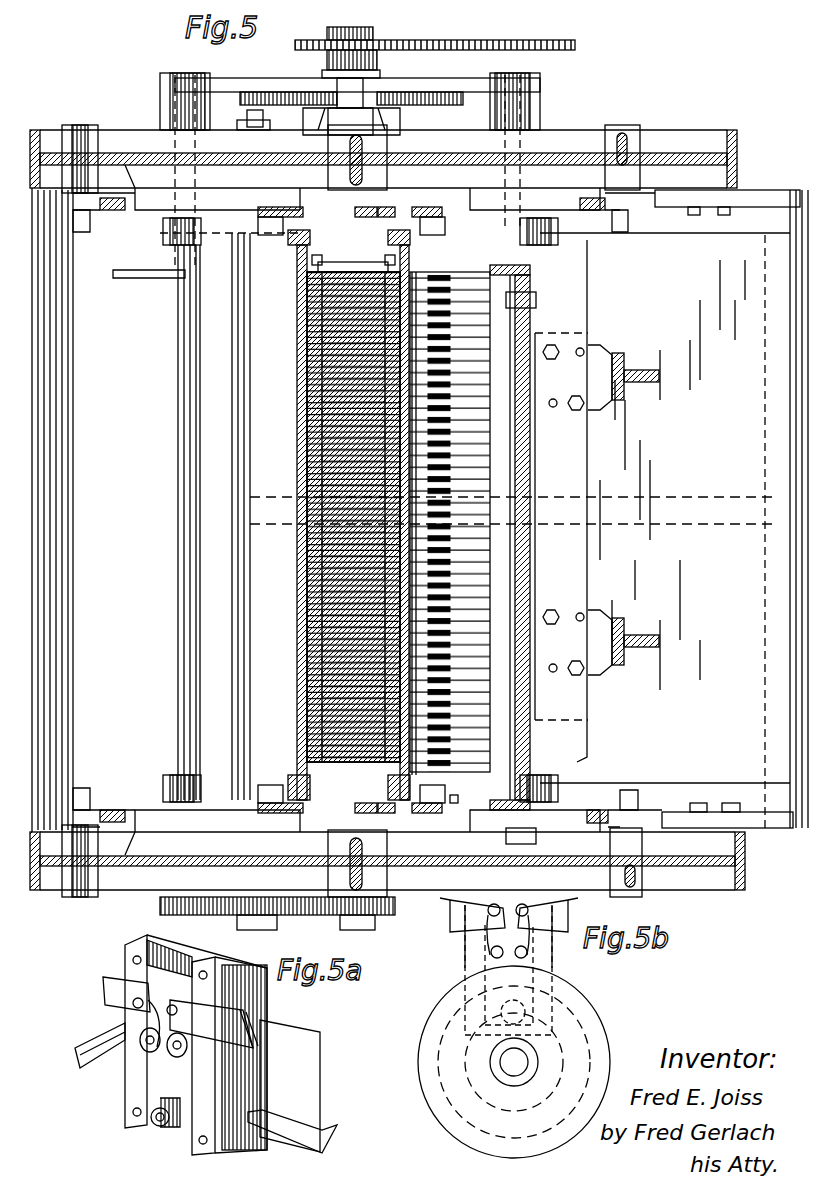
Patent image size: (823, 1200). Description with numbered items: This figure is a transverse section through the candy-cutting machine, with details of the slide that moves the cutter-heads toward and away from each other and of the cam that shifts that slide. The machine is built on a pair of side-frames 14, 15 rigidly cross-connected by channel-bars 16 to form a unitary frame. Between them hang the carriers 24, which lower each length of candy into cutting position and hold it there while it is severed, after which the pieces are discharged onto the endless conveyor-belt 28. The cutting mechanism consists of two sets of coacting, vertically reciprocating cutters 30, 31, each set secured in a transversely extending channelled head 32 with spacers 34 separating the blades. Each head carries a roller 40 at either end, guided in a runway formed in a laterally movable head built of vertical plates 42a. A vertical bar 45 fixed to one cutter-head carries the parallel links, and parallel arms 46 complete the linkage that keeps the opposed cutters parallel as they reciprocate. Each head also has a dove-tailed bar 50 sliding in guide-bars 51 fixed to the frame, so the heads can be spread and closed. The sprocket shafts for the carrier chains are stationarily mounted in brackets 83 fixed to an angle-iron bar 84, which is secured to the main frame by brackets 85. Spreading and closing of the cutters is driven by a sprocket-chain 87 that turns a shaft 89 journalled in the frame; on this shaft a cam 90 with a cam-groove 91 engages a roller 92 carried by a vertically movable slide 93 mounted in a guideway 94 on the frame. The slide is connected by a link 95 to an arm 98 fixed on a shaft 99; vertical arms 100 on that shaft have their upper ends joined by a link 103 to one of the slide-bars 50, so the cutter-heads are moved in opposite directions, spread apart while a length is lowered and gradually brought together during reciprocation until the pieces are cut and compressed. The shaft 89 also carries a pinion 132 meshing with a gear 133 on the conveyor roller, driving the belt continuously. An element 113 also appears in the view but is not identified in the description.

In FIG. 5, the side-frame 14 is at (720, 880).
In FIG. 5, the side-frame 15 is at (665, 155).
In FIG. 5A, the side-frame 15 is at (206, 1086).
In FIG. 5, the channel-bars 16 is at (58, 670).
In FIG. 5, the carriers 24 is at (475, 485).
In FIG. 5, the endless conveyor-belt 28 is at (333, 522).
In FIG. 5, the cutters 30 is at (360, 272).
In FIG. 5, the cutters 31 is at (300, 268).
In FIG. 5, the channelled head 32 is at (297, 334).
In FIG. 5, the spacers 34 is at (300, 386).
In FIG. 5, the roller 40 is at (316, 205).
In FIG. 5, the vertical plates 42a is at (430, 808).
In FIG. 5, the vertical bar 45 is at (300, 255).
In FIG. 5, the parallel arms 46 is at (108, 212).
In FIG. 5, the dove-tailed bar 50 is at (282, 205).
In FIG. 5, the guide-bars 51 is at (160, 205).
In FIG. 5, the brackets 83 is at (470, 272).
In FIG. 5, the angle-iron bar 84 is at (562, 452).
In FIG. 5, the brackets 85 is at (638, 372).
In FIG. 5, the sprocket-chain 87 is at (502, 46).
In FIG. 5, the shaft 89 is at (300, 775).
In FIG. 5B, the shaft 89 is at (520, 1063).
In FIG. 5, the cam 90 is at (245, 95).
In FIG. 5B, the cam 90 is at (416, 1045).
In FIG. 5B, the cam-groove 91 is at (440, 1082).
In FIG. 5A, the roller 92 is at (165, 1128).
In FIG. 5B, the roller 92 is at (520, 1013).
In FIG. 5, the slide 93 is at (380, 95).
In FIG. 5A, the slide 93 is at (160, 1075).
In FIG. 5B, the slide 93 is at (485, 960).
In FIG. 5, the guideway 94 is at (392, 117).
In FIG. 5A, the guideway 94 is at (128, 1100).
In FIG. 5B, the guideway 94 is at (545, 958).
In FIG. 5A, the link 95 is at (140, 1022).
In FIG. 5B, the link 95 is at (490, 945).
In FIG. 5, the arm 98 is at (275, 86).
In FIG. 5A, the arm 98 is at (105, 990).
In FIG. 5B, the arm 98 is at (455, 912).
In FIG. 5, the shaft 99 is at (180, 370).
In FIG. 5, the vertical arms 100 is at (165, 235).
In FIG. 5, the link 103 is at (212, 210).
In FIG. 5, the lever 113 is at (150, 278).
In FIG. 5, the pinion 132 is at (385, 912).
In FIG. 5, the gear 133 is at (160, 912).